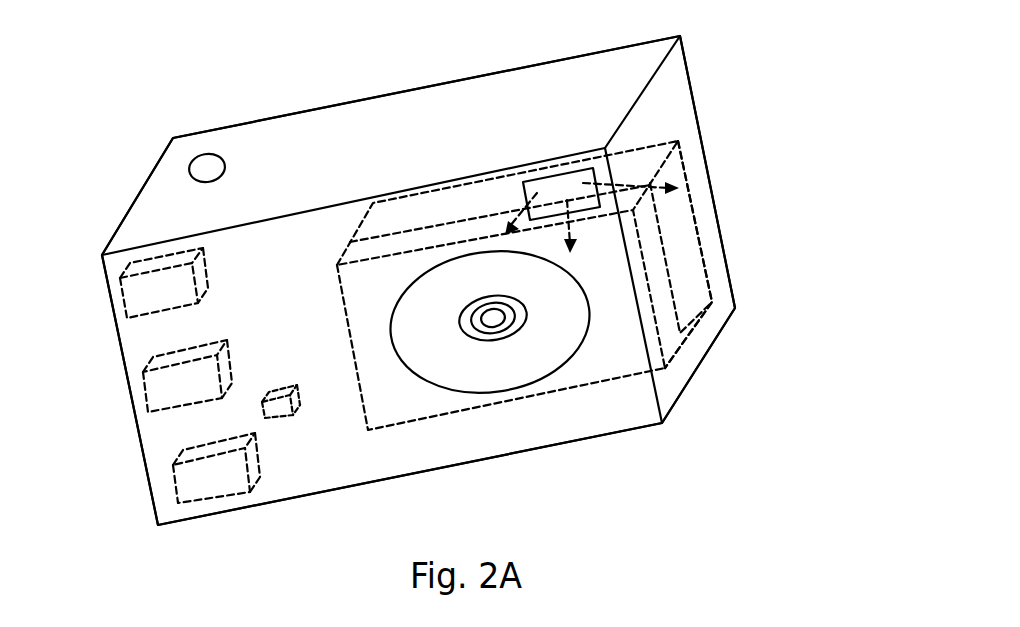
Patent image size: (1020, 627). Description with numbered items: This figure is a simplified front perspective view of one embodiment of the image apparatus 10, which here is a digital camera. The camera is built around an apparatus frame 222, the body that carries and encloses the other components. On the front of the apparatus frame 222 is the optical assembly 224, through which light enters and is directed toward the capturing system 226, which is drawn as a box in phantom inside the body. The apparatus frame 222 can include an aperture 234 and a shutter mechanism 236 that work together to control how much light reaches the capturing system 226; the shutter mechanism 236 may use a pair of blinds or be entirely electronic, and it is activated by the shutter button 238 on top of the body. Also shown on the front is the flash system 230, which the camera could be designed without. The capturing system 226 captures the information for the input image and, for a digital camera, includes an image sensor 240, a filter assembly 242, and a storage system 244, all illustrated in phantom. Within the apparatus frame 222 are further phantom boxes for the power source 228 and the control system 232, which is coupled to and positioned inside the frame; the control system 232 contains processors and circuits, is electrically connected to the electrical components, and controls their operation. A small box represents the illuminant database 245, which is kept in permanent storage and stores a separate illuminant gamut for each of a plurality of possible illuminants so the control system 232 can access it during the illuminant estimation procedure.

The image apparatus 10 is at (176, 129).
The apparatus frame 222 is at (418, 280).
The optical assembly 224 is at (490, 384).
The capturing system 226 is at (820, 252).
The power source 228 is at (162, 485).
The flash system 230 is at (552, 193).
The control system 232 is at (149, 406).
The aperture 234 is at (512, 405).
The shutter mechanism 236 is at (550, 396).
The shutter button 238 is at (221, 119).
The image sensor 240 is at (745, 254).
The filter assembly 242 is at (737, 267).
The storage system 244 is at (138, 293).
The illuminant database 245 is at (319, 464).